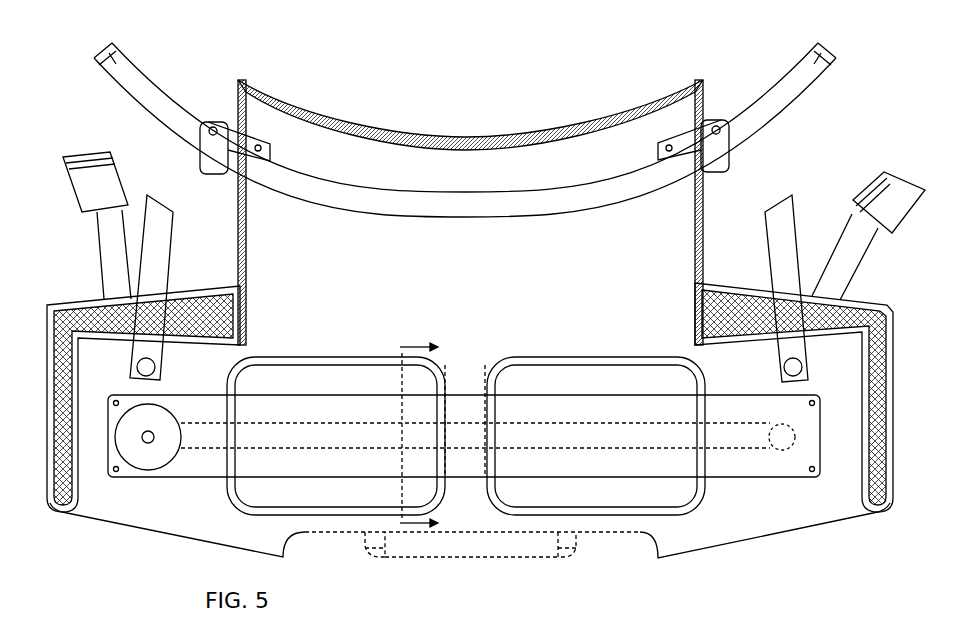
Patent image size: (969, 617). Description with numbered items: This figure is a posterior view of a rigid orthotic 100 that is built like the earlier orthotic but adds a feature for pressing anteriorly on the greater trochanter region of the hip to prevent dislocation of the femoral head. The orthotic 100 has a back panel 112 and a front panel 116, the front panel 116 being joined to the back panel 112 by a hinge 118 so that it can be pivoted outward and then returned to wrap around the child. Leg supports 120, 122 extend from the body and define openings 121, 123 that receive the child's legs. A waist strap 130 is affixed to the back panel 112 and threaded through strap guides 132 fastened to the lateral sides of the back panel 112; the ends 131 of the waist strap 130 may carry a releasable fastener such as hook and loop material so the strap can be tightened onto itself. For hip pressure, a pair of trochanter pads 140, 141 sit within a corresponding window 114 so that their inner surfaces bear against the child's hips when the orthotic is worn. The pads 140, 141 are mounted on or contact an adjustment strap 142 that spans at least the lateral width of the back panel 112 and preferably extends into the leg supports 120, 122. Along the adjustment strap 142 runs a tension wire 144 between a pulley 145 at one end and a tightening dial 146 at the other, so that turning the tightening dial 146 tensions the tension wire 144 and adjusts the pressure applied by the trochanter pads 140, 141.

The rigid orthotic 100 is at (643, 47).
The back panel 112 is at (322, 118).
The window 114 is at (334, 357).
The front panel 116 is at (552, 357).
The hinge 118 is at (501, 545).
The leg support 120 is at (153, 536).
The opening 121 is at (45, 378).
The leg support 122 is at (767, 538).
The opening 123 is at (898, 386).
The waist strap 130 is at (396, 186).
The ends of the strap 131 is at (118, 60).
The strap guides 132 is at (204, 121).
The trochanter pad 140 is at (278, 388).
The trochanter pad 141 is at (605, 388).
The adjustment strap 142 is at (297, 457).
The tension wire 144 is at (472, 453).
The pulley 145 is at (790, 444).
The tightening dial 146 is at (143, 455).